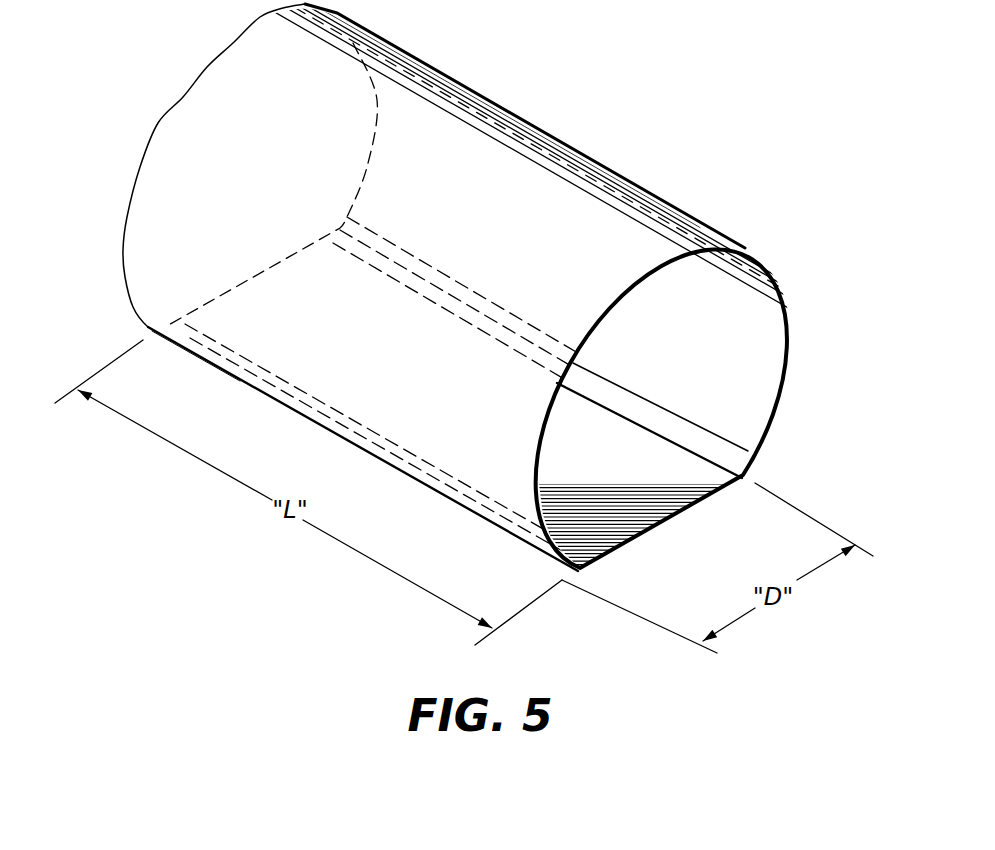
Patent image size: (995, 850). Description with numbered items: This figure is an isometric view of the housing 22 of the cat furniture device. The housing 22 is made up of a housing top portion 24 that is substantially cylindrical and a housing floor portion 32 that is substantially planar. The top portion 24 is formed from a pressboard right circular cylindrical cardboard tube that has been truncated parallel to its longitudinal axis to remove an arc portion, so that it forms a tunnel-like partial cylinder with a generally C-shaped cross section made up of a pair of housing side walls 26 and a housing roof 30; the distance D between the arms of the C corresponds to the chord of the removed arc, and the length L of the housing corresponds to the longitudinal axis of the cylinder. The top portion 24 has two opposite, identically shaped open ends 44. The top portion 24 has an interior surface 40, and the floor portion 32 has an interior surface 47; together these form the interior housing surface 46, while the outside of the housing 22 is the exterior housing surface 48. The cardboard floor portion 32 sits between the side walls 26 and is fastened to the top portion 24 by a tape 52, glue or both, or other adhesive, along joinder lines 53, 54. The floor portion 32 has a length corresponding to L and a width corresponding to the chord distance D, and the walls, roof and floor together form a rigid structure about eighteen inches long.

The housing 22 is at (562, 86).
The housing top portion 24 is at (555, 137).
The housing side walls 26 is at (790, 368).
The housing roof 30 is at (393, 108).
The housing floor portion 32 is at (657, 532).
The interior surface of housing top portion 40 is at (729, 404).
The housing open end 44 is at (158, 124).
The interior housing surface 46 is at (662, 351).
The interior surface of housing floor portion 47 is at (605, 459).
The exterior housing surface 48 is at (384, 348).
The tape 52 is at (748, 453).
The joinder line 53 is at (738, 481).
The joinder line 54 is at (594, 572).